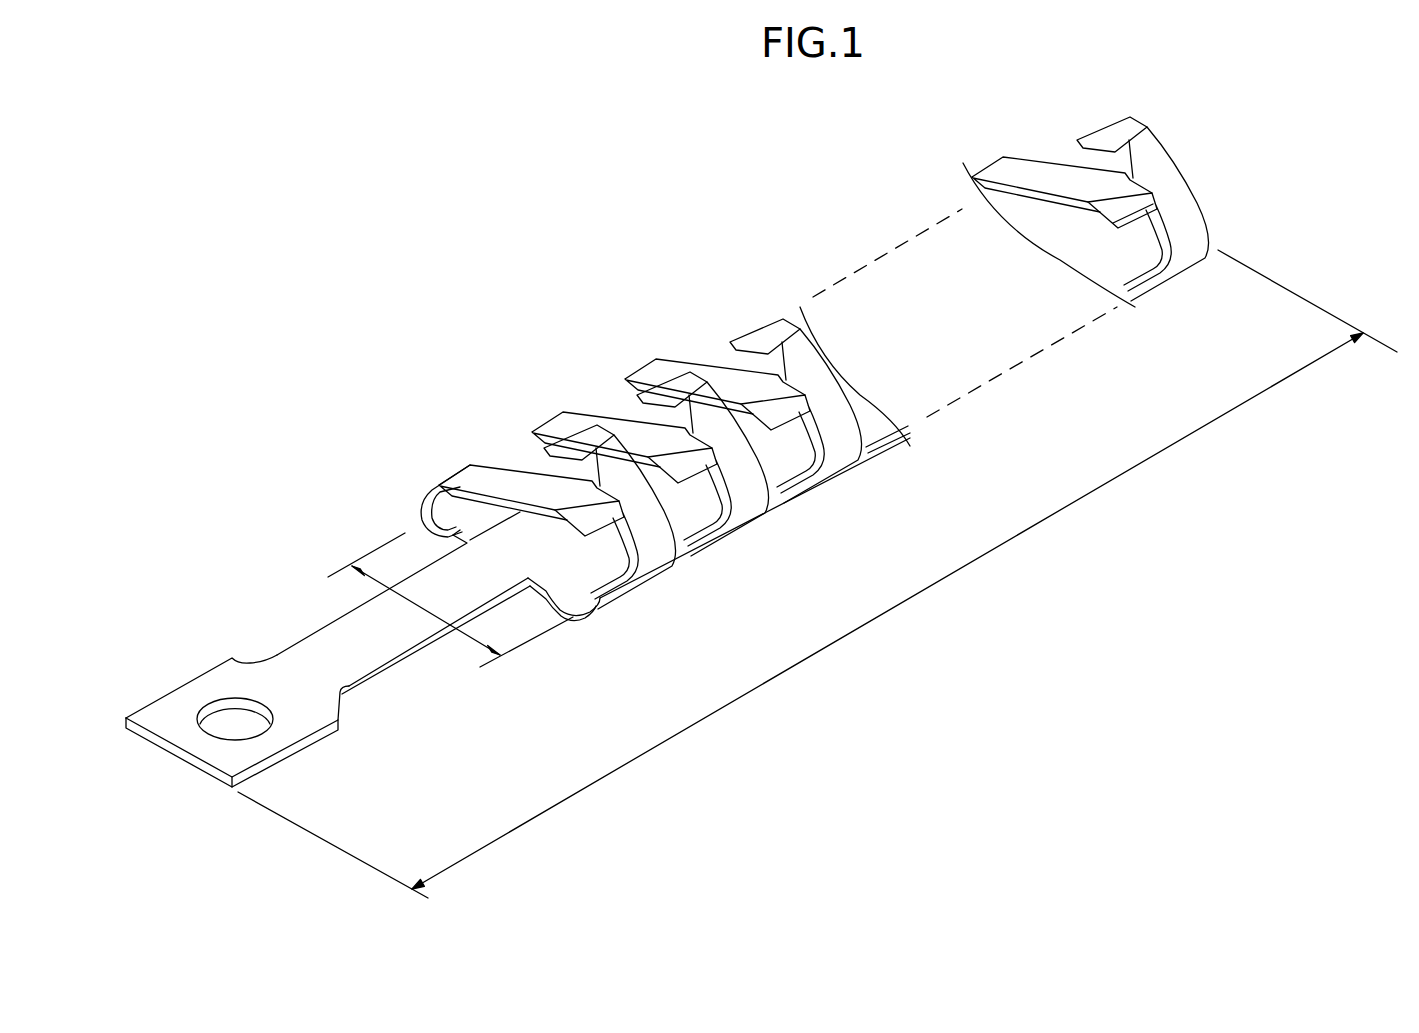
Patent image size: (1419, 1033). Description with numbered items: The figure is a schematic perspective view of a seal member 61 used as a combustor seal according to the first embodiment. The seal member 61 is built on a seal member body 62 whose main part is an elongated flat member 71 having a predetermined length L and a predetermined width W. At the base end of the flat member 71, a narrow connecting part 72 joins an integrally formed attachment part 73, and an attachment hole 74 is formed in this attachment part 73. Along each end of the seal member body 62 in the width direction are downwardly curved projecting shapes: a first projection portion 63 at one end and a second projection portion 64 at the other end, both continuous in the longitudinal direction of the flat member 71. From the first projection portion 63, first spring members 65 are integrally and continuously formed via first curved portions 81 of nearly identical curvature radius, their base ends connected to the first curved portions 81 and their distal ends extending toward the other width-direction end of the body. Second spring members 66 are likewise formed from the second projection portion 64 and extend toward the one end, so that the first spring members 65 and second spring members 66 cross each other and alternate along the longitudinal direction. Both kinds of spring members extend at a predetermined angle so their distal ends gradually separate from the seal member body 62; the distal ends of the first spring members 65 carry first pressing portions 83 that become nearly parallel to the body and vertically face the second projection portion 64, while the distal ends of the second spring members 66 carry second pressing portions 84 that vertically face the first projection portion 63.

The seal member 61 is at (751, 480).
The seal member body 62 is at (196, 778).
The first projection portion 63 is at (418, 522).
The second projection portion 64 is at (578, 617).
The first spring member 65 is at (1053, 178).
The second spring member 66 is at (628, 487).
The flat member 71 is at (527, 545).
The connecting part 72 is at (362, 656).
The attachment part 73 is at (170, 705).
The attachment hole 74 is at (235, 697).
The first curved portion 81 is at (421, 497).
The first pressing portion 83 is at (600, 565).
The second pressing portion 84 is at (578, 435).